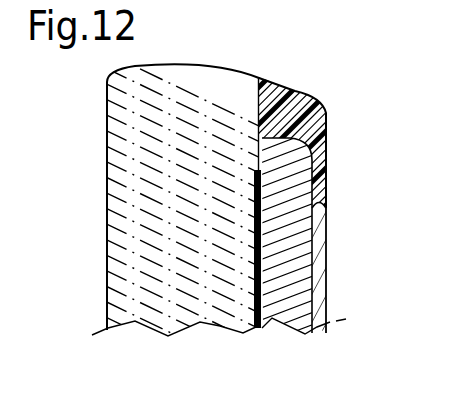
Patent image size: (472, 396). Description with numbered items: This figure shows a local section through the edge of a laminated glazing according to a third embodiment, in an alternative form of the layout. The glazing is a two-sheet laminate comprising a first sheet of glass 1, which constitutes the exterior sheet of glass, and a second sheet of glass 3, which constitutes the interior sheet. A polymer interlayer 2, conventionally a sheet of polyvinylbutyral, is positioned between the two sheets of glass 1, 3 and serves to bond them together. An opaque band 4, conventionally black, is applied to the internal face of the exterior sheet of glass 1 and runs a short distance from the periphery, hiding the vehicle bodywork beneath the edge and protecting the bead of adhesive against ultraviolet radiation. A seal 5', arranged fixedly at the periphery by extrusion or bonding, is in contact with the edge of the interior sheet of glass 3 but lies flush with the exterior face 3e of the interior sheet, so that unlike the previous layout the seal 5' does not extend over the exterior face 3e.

The first sheet of glass 1 is at (145, 201).
The polymer interlayer 2 is at (288, 174).
The second sheet of glass 3 is at (323, 295).
The exterior face of the interior sheet of glass 3e is at (330, 237).
The opaque band 4 is at (264, 258).
The seal 5' is at (329, 125).